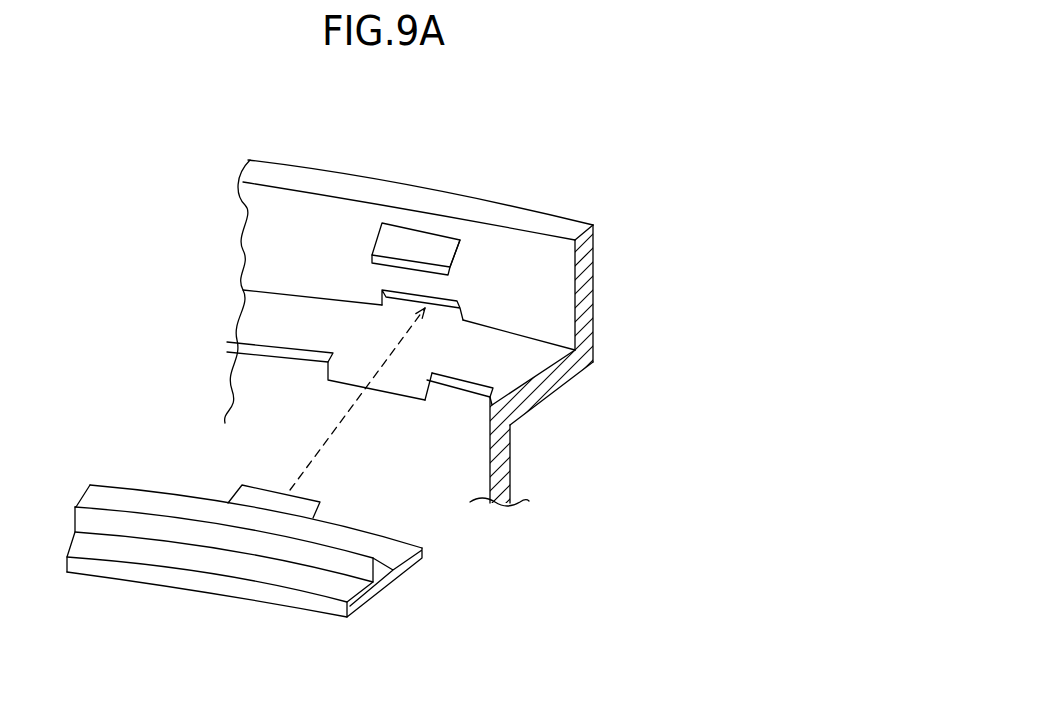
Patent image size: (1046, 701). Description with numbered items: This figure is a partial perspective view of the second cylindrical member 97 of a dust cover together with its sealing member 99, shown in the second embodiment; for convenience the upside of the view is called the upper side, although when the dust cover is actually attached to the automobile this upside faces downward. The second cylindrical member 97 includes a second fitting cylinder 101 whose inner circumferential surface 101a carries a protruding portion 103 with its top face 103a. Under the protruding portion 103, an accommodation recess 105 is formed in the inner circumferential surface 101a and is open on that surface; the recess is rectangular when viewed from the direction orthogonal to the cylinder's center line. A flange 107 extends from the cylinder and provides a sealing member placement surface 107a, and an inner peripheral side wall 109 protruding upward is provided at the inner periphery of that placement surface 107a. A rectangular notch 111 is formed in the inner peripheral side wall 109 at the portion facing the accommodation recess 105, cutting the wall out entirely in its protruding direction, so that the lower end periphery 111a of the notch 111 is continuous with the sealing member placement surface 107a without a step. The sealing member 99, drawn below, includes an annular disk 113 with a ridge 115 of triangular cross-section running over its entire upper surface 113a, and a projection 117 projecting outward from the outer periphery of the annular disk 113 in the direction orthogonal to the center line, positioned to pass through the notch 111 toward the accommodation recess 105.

The second cylindrical member 97 is at (288, 142).
The sealing member 99 is at (163, 603).
The second fitting cylinder 101 is at (597, 290).
The inner circumferential surface 101a is at (547, 262).
The protruding portion 103 is at (390, 245).
The top surface of protrusion 103a is at (410, 247).
The accommodation recess 105 is at (445, 297).
The flange 107 is at (572, 385).
The sealing member placement surface 107a is at (238, 297).
The inner peripheral side wall 109 is at (510, 397).
The notch 111 is at (340, 378).
The lower end periphery 111a is at (410, 386).
The annular disk 113 is at (277, 595).
The upper surface 113a is at (95, 548).
The ridge 115 is at (112, 519).
The projection 117 is at (303, 498).